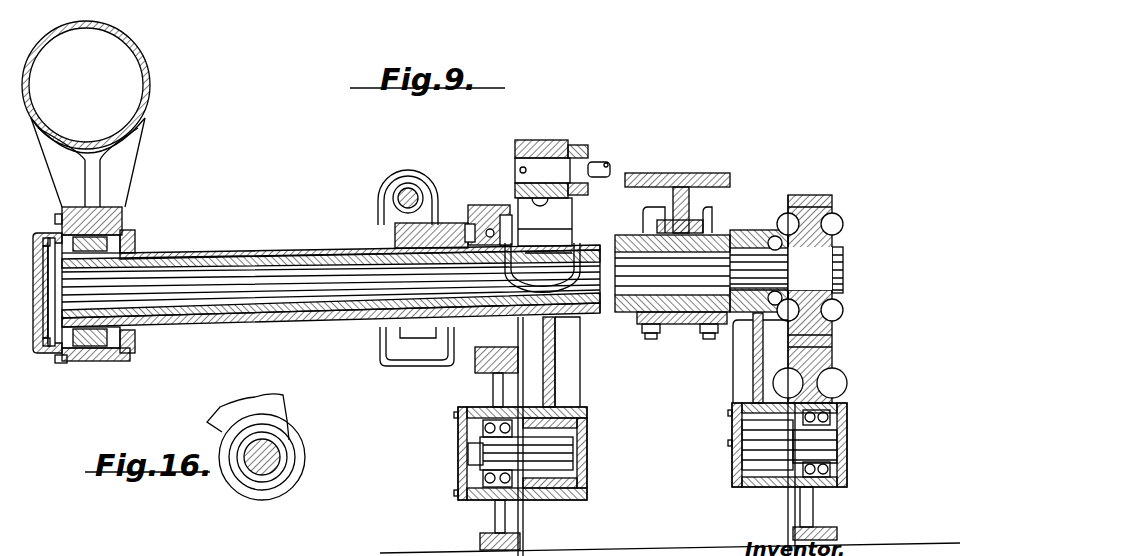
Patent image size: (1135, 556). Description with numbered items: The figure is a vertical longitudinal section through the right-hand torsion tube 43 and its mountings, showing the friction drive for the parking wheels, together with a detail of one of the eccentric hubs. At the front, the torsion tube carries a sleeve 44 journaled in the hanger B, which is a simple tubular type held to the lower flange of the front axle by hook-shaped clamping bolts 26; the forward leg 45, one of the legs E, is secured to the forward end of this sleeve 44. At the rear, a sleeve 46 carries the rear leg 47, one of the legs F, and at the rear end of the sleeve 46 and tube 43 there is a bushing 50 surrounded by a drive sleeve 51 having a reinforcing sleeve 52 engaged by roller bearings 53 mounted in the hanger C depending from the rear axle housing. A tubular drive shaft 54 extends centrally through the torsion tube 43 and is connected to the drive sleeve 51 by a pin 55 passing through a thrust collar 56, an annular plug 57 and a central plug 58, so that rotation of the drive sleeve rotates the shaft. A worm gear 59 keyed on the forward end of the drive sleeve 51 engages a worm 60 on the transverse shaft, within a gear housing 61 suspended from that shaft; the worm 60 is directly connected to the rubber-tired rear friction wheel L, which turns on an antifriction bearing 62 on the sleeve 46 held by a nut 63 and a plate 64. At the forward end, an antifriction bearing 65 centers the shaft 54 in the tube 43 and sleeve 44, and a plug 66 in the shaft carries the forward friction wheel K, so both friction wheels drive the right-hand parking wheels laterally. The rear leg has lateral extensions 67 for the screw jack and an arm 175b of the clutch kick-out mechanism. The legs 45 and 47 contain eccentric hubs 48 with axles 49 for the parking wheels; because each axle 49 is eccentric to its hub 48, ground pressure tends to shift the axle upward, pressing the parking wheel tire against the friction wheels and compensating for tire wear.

In FIG. 9, the hanger C is at (125, 162).
In FIG. 9, the bushing 50 is at (134, 228).
In FIG. 9, the reinforcing sleeve 52 is at (137, 250).
In FIG. 9, the drive sleeve 51 is at (205, 254).
In FIG. 9, the sleeve 46 is at (258, 262).
In FIG. 9, the torsion tube 43 is at (308, 254).
In FIG. 9, the tubular drive shaft 54 is at (265, 302).
In FIG. 9, the thrust collar 56 is at (47, 352).
In FIG. 9, the annular plug 57 is at (50, 270).
In FIG. 9, the pin 55 is at (52, 292).
In FIG. 9, the central plug 58 is at (43, 241).
In FIG. 9, the roller bearings 53 is at (118, 361).
In FIG. 9, the worm 60 is at (408, 196).
In FIG. 9, the worm gear 59 is at (430, 228).
In FIG. 9, the friction wheel L is at (488, 214).
In FIG. 9, the antifriction bearing 62 is at (504, 216).
In FIG. 9, the nut 63 is at (468, 226).
In FIG. 9, the plate 64 is at (519, 230).
In FIG. 9, the lateral extensions 67 is at (562, 238).
In FIG. 9, the arm 175b is at (611, 165).
In FIG. 9, the sleeve 44 is at (628, 243).
In FIG. 9, the plug 66 is at (722, 240).
In FIG. 9, the antifriction bearing 65 is at (771, 238).
In FIG. 9, the friction wheel K is at (808, 205).
In FIG. 9, the hanger B is at (674, 334).
In FIG. 9, the hook-shaped clamping bolts 26 is at (650, 340).
In FIG. 9, the gear housing 61 is at (378, 366).
In FIG. 9, the rear leg 47 is at (556, 372).
In FIG. 16, the rear leg 47 is at (280, 412).
In FIG. 9, the leg F is at (597, 407).
In FIG. 9, the eccentric hub 48 is at (560, 461).
In FIG. 16, the eccentric hub 48 is at (245, 458).
In FIG. 9, the axle 49 is at (462, 490).
In FIG. 16, the axle 49 is at (275, 462).
In FIG. 9, the forward leg 45 is at (742, 360).
In FIG. 9, the leg E is at (746, 400).